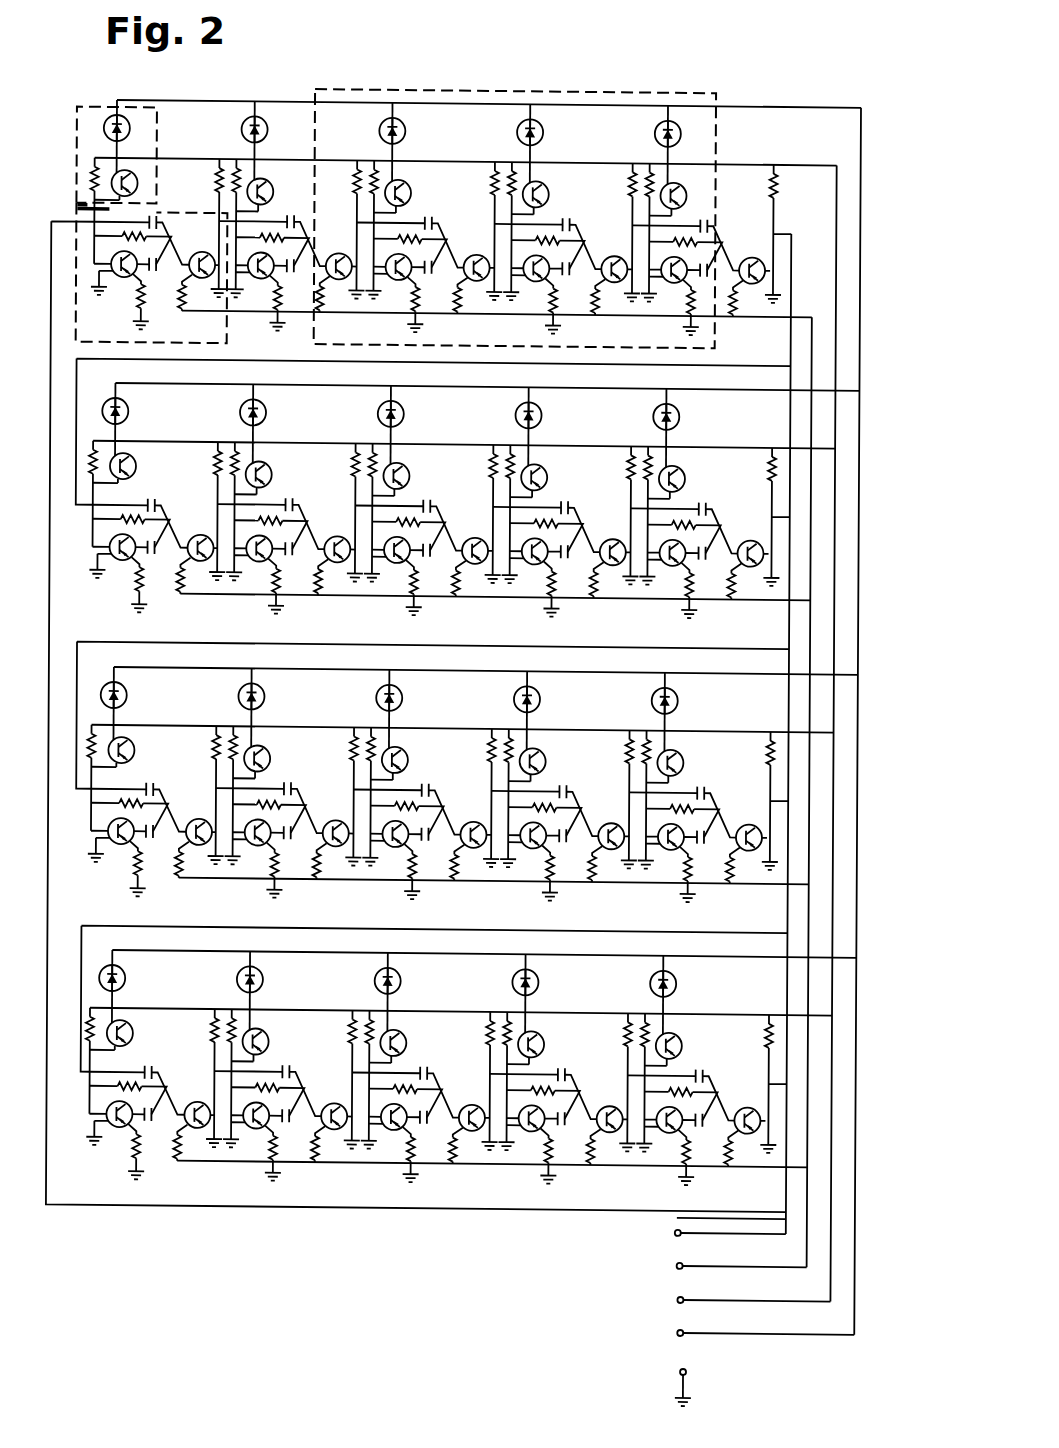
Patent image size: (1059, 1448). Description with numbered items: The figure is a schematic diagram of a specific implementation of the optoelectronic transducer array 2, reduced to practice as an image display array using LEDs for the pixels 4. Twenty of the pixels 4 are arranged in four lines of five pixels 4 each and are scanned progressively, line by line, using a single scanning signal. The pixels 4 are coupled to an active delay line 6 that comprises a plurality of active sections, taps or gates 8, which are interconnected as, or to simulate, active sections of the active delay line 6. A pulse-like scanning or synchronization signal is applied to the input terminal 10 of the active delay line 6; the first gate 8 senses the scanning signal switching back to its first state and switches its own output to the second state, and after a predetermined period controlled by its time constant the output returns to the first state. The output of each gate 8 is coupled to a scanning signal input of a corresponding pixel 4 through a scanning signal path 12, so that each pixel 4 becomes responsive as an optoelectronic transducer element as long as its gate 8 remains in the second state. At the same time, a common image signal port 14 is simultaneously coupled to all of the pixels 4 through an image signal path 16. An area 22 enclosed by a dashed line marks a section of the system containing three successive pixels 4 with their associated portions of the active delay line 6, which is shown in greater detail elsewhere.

The optoelectronic transducer array 2 is at (797, 78).
The pixel 4 is at (93, 104).
The active delay line 6 is at (146, 1220).
The gate 8 is at (97, 318).
The input terminal 10 is at (683, 1222).
The scanning signal path 12 is at (82, 207).
The common image signal port 14 is at (686, 1334).
The image signal path 16 is at (852, 1333).
The area enclosed by a dashed line 22 is at (665, 87).